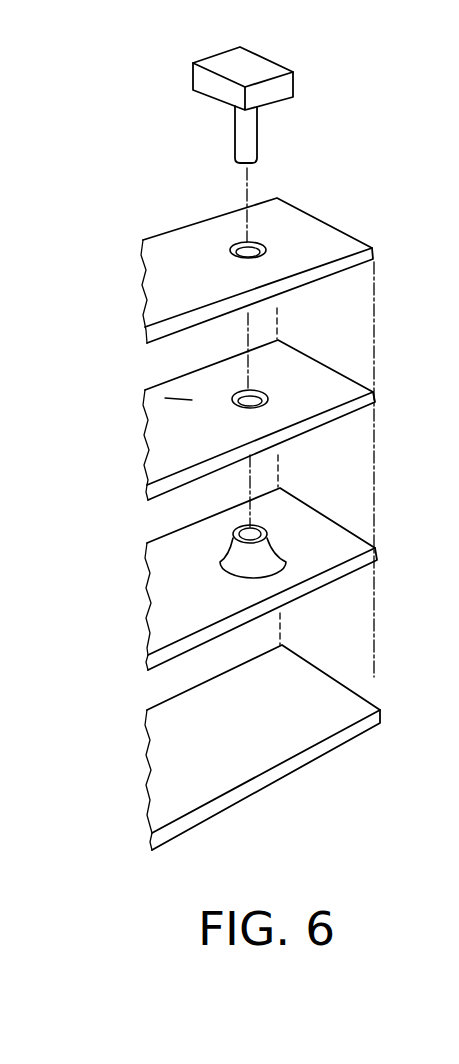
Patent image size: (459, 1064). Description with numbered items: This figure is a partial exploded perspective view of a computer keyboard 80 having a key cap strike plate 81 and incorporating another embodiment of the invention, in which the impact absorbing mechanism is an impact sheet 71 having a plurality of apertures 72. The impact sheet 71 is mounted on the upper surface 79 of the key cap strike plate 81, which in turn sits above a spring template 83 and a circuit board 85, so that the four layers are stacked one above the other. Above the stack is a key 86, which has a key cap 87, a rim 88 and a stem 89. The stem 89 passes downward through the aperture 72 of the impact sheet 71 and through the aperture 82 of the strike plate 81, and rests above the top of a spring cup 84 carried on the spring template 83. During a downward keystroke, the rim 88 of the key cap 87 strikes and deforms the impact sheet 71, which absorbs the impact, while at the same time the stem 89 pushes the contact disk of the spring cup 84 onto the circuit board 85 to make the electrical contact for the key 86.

The key 86 is at (146, 71).
The key cap 87 is at (305, 85).
The rim 88 is at (287, 103).
The stem 89 is at (243, 140).
The keyboard 80 is at (96, 242).
The impact sheet 71 is at (338, 228).
The apertures 72 is at (231, 249).
The key cap strike plate 81 is at (327, 364).
The upper surface 79 is at (192, 400).
The aperture 82 is at (233, 400).
The spring template 83 is at (338, 523).
The spring cup 84 is at (237, 557).
The circuit board 85 is at (347, 650).